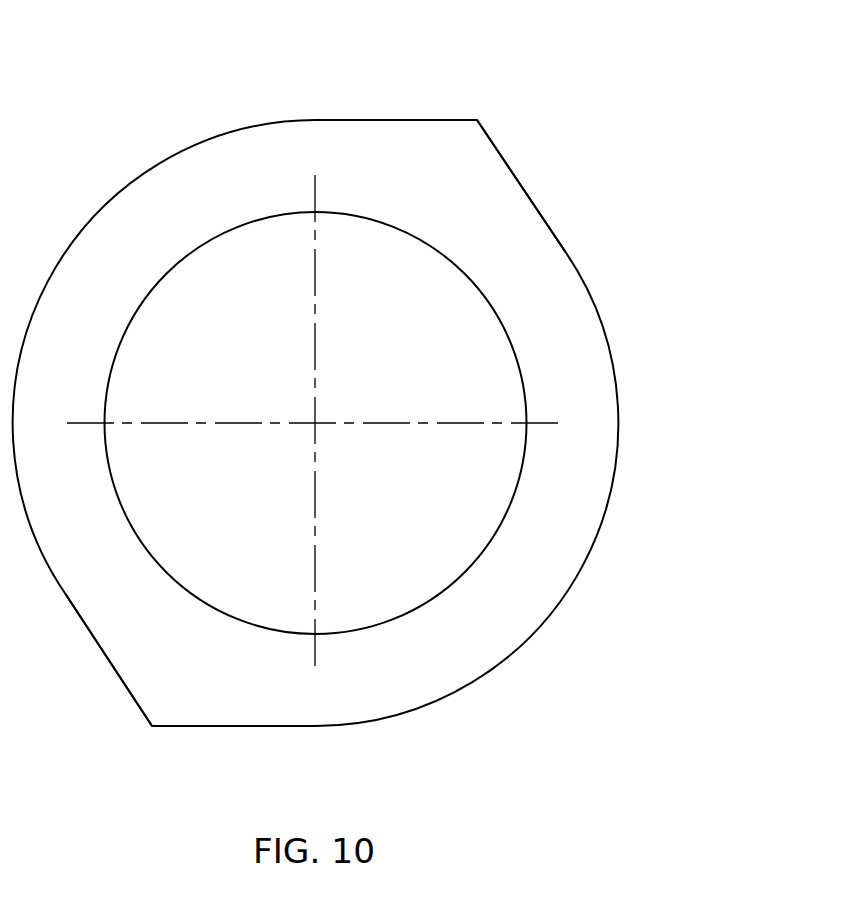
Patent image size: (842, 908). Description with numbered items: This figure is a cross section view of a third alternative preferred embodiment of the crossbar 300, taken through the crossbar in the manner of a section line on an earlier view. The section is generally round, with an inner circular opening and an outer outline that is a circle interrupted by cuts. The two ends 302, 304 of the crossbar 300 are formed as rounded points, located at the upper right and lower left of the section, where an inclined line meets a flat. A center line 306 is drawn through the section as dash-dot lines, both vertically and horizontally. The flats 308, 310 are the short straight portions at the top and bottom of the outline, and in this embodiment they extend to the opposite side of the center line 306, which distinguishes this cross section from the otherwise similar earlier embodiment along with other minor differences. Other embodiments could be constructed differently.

The crossbar 300 is at (577, 333).
The end of crossbar 302 is at (492, 110).
The end of crossbar 304 is at (150, 728).
The center line 306 is at (315, 502).
The flat 308 is at (158, 740).
The flat 310 is at (468, 97).